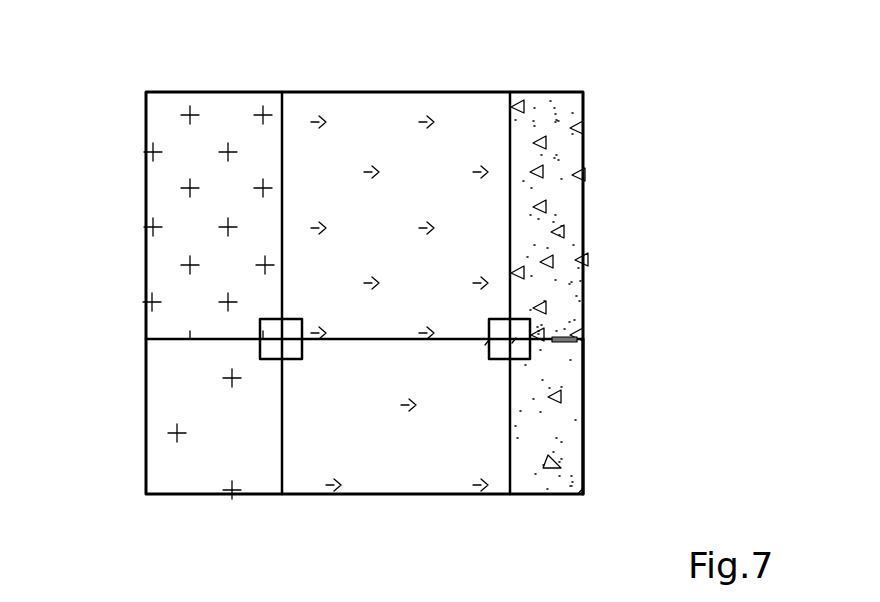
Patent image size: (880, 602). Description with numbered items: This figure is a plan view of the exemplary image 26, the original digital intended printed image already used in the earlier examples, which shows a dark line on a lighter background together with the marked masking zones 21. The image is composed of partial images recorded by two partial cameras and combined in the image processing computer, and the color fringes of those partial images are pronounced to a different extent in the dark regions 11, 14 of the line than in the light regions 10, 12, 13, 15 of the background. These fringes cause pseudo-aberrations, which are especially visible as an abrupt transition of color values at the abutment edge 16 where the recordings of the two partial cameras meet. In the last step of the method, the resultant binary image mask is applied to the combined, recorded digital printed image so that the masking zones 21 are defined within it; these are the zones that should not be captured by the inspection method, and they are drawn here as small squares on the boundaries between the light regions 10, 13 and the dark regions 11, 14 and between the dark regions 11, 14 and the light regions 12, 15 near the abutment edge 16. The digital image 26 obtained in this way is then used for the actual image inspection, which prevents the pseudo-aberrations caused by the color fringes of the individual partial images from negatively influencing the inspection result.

The light region 10 is at (192, 125).
The dark region 11 is at (386, 125).
The light region 12 is at (553, 125).
The light region 13 is at (192, 463).
The dark region 14 is at (382, 463).
The light region 15 is at (545, 465).
The masking zone 21 is at (273, 333).
The abutment edge 16 is at (555, 338).
The exemplary image 26 is at (585, 395).